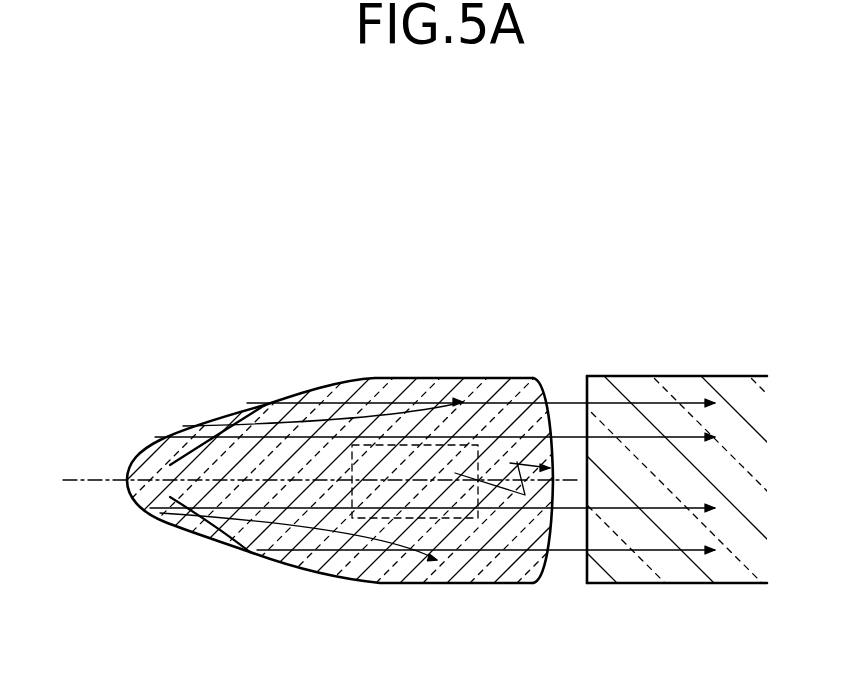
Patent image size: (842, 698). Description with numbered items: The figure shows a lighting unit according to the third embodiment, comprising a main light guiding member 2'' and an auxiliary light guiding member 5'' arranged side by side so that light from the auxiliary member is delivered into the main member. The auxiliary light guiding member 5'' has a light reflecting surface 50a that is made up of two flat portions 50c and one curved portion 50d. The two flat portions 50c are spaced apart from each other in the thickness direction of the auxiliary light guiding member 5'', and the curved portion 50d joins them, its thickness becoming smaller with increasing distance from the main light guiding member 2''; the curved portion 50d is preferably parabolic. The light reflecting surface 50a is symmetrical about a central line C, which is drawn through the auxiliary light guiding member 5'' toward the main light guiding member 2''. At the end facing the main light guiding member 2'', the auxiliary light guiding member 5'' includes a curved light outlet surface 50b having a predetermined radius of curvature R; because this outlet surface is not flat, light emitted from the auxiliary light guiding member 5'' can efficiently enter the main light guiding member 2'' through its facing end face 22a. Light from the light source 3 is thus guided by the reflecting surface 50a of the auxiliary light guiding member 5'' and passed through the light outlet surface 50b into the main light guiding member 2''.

The auxiliary light guiding member 5'' is at (373, 432).
The light reflecting surface 50a is at (401, 411).
The curved portion 50d is at (192, 425).
The flat portions 50c is at (478, 378).
The light outlet surface 50b is at (556, 408).
The incident end face of light guide 22a is at (588, 377).
The main light guiding member 2'' is at (623, 419).
The light source 3 is at (478, 518).
The radius of curvature R is at (502, 466).
The central line C is at (78, 480).